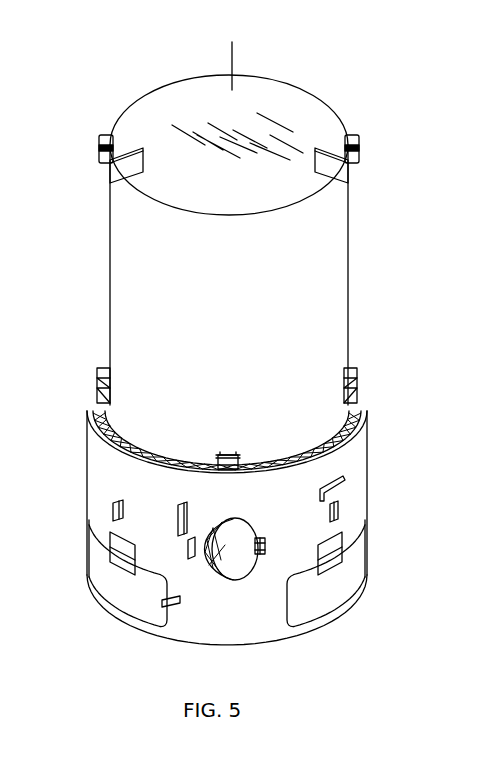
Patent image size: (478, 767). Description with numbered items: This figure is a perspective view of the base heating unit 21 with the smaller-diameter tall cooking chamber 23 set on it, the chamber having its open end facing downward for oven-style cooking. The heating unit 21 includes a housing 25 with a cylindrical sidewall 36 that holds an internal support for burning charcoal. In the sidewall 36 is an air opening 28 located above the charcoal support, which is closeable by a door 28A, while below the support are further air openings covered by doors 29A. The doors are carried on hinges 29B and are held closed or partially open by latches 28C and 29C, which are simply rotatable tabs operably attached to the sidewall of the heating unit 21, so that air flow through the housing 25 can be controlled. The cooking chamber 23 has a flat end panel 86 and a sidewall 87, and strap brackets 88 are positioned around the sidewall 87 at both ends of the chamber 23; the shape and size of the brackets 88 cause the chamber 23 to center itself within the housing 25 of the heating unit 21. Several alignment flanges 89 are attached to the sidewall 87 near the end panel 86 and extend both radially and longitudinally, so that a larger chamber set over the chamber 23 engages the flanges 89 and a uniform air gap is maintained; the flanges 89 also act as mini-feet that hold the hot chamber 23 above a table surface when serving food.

The base heating unit 21 is at (393, 421).
The smaller-diameter cooking chamber 23 is at (330, 68).
The housing 25 is at (267, 623).
The air opening 28 is at (207, 570).
The door 28A is at (240, 532).
The latch 28C is at (188, 548).
The door 29A is at (118, 580).
The hinge 29B is at (123, 558).
The latch 29C is at (113, 512).
The cylindrical sidewall 36 is at (92, 453).
The flat end panel 86 is at (190, 88).
The sidewall 87 is at (332, 278).
The strap brackets 88 is at (112, 130).
The alignment flanges 89 is at (233, 56).